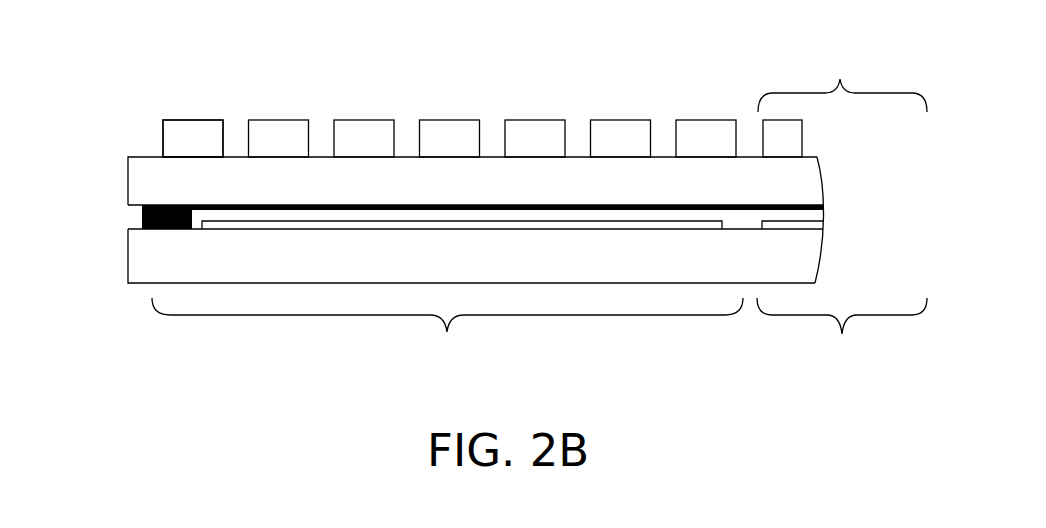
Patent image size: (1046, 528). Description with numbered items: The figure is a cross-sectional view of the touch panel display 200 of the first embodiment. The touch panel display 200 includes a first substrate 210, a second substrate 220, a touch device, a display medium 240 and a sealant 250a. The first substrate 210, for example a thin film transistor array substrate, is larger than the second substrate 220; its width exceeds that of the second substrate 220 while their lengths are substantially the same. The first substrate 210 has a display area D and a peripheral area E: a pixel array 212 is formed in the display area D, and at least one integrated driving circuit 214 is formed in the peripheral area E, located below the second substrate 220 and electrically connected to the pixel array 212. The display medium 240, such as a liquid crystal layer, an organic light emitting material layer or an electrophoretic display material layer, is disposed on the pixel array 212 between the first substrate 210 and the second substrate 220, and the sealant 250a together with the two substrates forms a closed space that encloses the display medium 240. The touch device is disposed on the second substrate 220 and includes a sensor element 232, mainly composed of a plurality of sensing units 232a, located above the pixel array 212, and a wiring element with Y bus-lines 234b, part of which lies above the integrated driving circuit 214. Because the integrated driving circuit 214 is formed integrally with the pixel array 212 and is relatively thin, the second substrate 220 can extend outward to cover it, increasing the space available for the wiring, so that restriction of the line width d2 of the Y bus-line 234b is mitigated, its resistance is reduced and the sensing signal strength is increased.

The touch panel display 200 is at (915, 429).
The first substrate 210 is at (812, 258).
The pixel array 212 is at (812, 225).
The integrated driving circuit 214 is at (212, 224).
The second substrate 220 is at (812, 182).
The sensor element 232 is at (842, 81).
The sensing unit 232a is at (795, 139).
The Y bus-line 234b is at (167, 140).
The display medium 240 is at (813, 212).
The sealant 250a is at (142, 215).
The line width of the Y bus-line d2 is at (222, 149).
The peripheral area E is at (447, 332).
The display area D is at (842, 334).